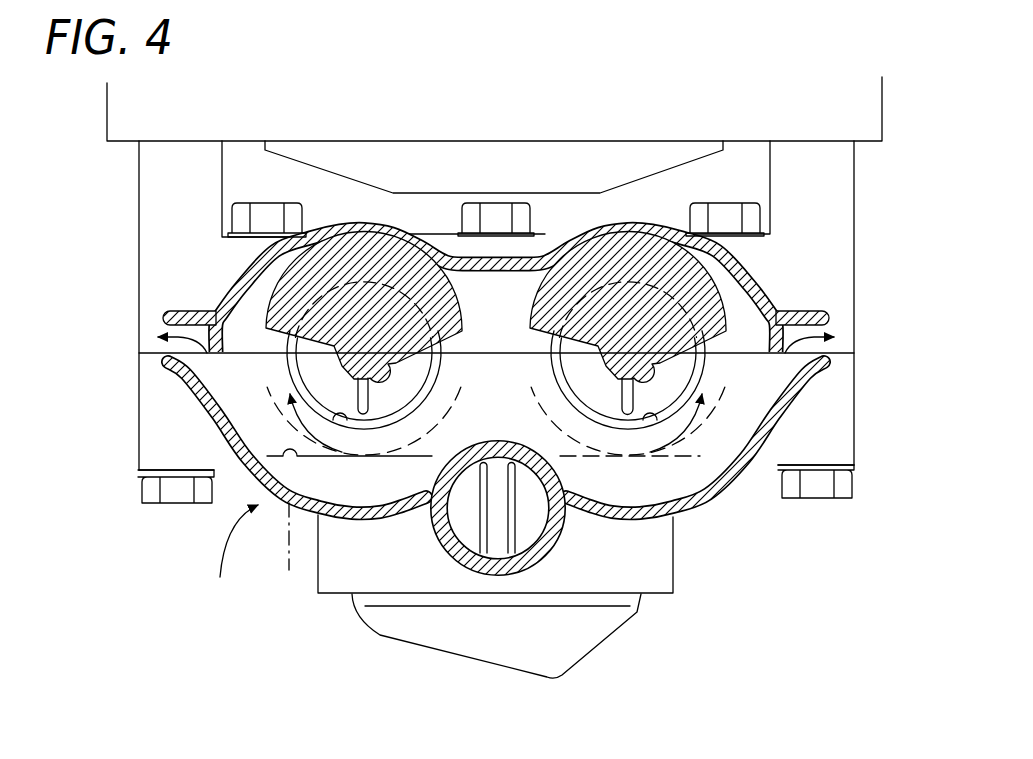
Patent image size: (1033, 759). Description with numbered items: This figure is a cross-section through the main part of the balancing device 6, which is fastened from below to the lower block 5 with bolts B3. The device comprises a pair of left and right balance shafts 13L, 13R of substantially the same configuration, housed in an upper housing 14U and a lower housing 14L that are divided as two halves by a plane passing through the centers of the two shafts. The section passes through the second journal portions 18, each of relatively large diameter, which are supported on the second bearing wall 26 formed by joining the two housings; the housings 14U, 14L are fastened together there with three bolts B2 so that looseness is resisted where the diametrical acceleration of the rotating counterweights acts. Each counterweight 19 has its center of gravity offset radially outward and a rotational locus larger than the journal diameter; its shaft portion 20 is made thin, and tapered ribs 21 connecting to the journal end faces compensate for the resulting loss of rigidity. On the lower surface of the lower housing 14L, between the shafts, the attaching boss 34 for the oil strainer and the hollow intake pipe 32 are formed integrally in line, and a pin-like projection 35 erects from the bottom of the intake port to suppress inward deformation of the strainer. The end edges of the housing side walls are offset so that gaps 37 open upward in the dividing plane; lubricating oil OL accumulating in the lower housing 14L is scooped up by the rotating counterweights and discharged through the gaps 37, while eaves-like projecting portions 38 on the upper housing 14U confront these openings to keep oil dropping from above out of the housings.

The lower block 5 is at (858, 118).
The upper housing 14U is at (835, 208).
The lower housing 14L is at (845, 432).
The left balance shaft 13L is at (362, 252).
The right balance shaft 13R is at (631, 252).
The counterweight 19 is at (590, 267).
The bolts B2 is at (264, 210).
The bolts B3 is at (178, 497).
The eaves-like projecting portions 38 is at (180, 312).
The gaps 37 is at (160, 352).
The second journal portions 18 is at (500, 423).
The shaft portion 20 is at (600, 362).
The tapered ribs 21 is at (620, 407).
The second bearing wall 26 is at (648, 412).
The intake pipe 32 is at (545, 545).
The pin-like projection 35 is at (490, 535).
The attaching boss 34 is at (673, 560).
The balancing device 6 is at (231, 560).
The lubricating oil OL is at (290, 559).